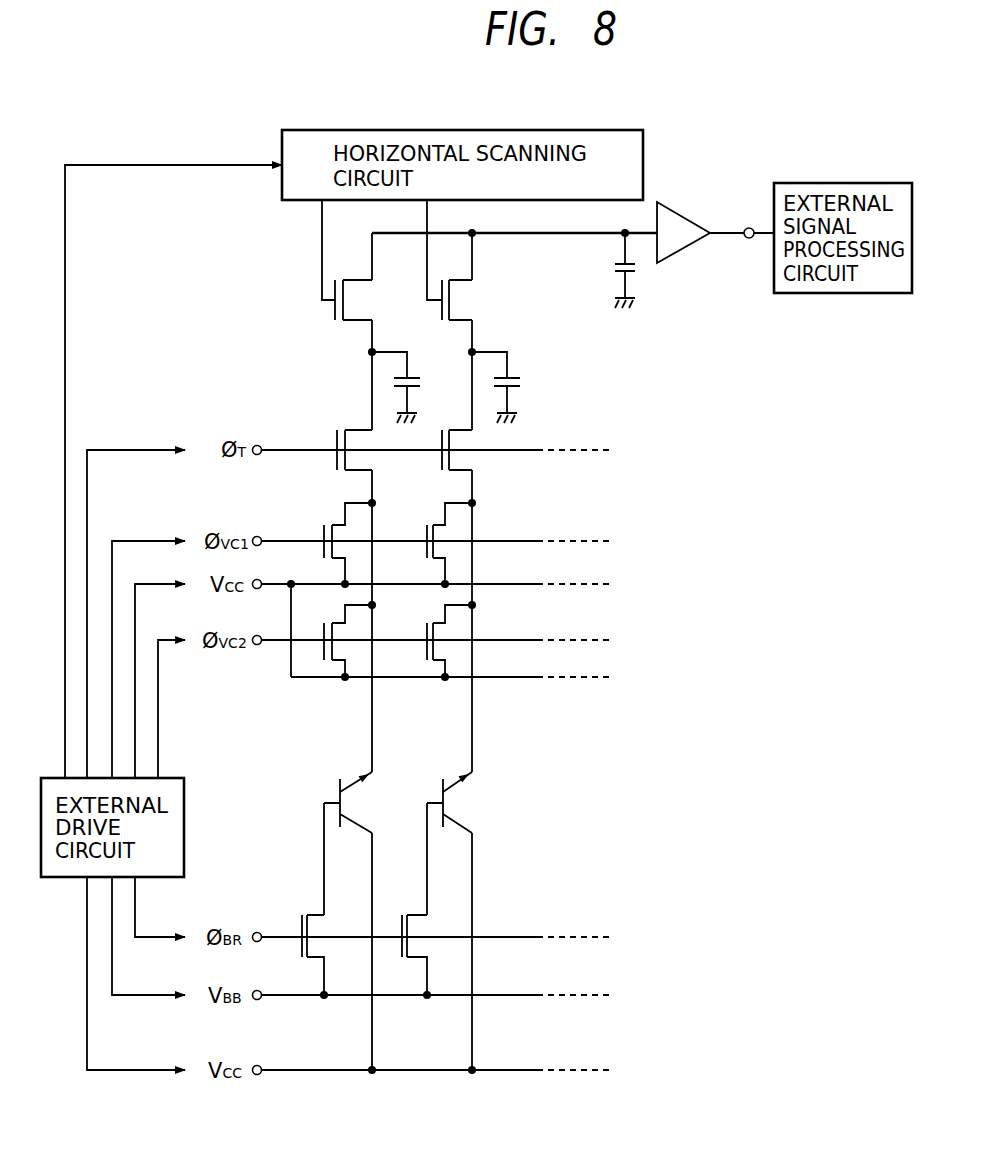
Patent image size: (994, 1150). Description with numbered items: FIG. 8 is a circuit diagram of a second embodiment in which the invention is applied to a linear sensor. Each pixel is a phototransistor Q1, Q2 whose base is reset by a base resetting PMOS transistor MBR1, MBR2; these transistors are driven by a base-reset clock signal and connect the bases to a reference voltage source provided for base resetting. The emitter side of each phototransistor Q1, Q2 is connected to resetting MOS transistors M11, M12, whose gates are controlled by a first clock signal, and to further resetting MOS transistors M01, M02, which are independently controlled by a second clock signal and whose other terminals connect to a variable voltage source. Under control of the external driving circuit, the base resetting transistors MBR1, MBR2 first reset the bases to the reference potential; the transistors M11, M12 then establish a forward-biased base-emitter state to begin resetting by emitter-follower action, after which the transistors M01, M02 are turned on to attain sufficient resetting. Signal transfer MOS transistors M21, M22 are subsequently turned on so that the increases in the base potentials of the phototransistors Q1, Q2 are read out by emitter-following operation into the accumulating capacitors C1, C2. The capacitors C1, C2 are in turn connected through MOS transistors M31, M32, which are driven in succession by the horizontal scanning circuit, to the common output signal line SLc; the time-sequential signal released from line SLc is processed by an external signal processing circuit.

The MOS transistor M31 is at (372, 300).
The MOS transistor M32 is at (478, 300).
The accumulating capacitor C1 is at (403, 386).
The accumulating capacitor C2 is at (510, 387).
The signal transfer MOS transistor M21 is at (344, 436).
The signal transfer MOS transistor M22 is at (452, 436).
The resetting MOS transistor M11 is at (334, 539).
The resetting MOS transistor M12 is at (437, 539).
The resetting MOS transistor M01 is at (338, 637).
The resetting MOS transistor M02 is at (438, 637).
The phototransistor Q1 is at (355, 802).
The phototransistor Q2 is at (463, 802).
The base resetting PMOS transistor MBR1 is at (290, 941).
The base resetting PMOS transistor MBR2 is at (400, 941).
The common output signal line SLc is at (572, 236).